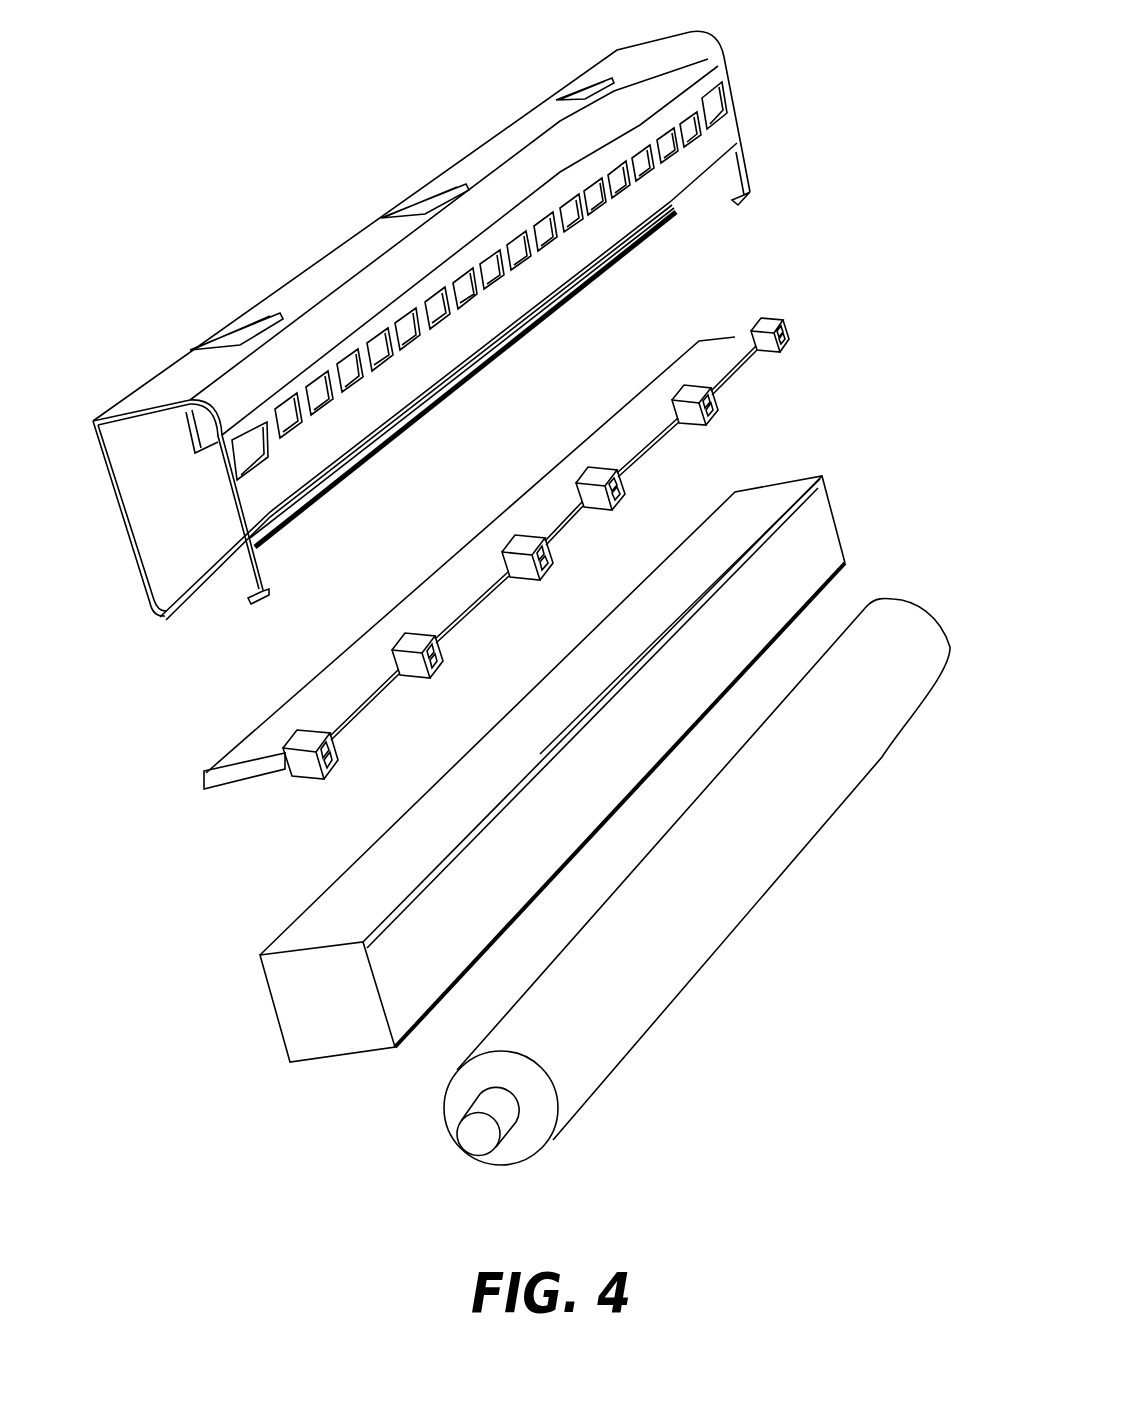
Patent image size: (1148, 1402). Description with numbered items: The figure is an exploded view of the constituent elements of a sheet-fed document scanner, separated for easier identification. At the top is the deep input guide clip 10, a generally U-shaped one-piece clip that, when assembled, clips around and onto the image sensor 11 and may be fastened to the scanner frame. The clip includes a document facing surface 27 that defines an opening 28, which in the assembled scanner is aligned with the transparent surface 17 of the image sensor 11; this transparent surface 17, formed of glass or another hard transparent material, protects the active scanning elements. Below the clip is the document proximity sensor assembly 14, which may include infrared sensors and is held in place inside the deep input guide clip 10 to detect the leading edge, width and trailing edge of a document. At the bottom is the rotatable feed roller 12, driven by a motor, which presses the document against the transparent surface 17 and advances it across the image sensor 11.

The deep input guide clip 10 is at (325, 273).
The image sensor 11 is at (290, 997).
The feed roller 12 is at (873, 740).
The document proximity sensor assembly 14 is at (203, 728).
The transparent surface 17 is at (426, 972).
The document facing surface 27 is at (712, 131).
The opening 28 is at (707, 221).